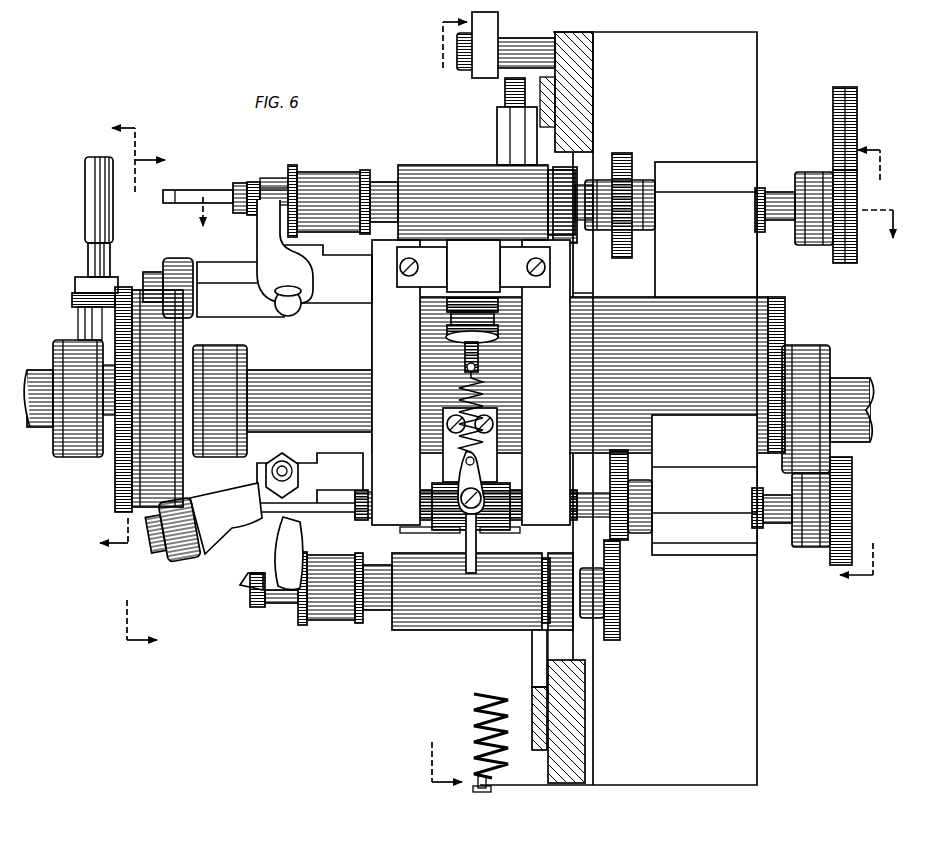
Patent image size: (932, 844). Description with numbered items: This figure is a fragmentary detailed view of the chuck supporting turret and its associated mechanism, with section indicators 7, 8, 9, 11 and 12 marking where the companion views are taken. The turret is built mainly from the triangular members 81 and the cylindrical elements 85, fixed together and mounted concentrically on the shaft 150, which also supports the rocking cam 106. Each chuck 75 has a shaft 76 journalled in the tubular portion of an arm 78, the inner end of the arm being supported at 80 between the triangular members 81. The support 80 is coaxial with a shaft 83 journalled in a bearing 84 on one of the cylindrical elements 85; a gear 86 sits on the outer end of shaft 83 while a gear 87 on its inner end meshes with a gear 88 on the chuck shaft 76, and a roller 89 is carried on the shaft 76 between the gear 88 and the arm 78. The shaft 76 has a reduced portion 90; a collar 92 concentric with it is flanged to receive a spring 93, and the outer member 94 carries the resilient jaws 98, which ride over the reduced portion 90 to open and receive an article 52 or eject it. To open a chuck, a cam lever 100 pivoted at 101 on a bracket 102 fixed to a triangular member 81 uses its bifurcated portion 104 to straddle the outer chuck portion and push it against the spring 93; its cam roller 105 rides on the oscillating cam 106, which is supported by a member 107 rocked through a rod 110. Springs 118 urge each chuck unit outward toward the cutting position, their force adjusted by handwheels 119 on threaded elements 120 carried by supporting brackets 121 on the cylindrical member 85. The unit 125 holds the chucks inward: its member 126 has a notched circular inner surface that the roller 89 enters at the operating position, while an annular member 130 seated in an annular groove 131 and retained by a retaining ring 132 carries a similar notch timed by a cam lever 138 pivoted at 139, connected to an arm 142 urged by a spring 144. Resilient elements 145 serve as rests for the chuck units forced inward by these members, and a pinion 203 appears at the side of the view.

The article 52 is at (194, 193).
The chuck 75 is at (236, 158).
The shaft 76 is at (578, 208).
The arm 78 is at (440, 166).
The support 80 is at (422, 500).
The triangular members 81 is at (372, 336).
The shaft 83 is at (780, 200).
The bearing 84 is at (745, 268).
The cylindrical elements 85 is at (705, 300).
The gear 86 is at (842, 264).
The gear 87 is at (632, 256).
The gear 88 is at (614, 256).
The roller 89 is at (573, 166).
The reduced portion 90 is at (254, 185).
The collar 92 is at (368, 175).
The spring 93 is at (330, 175).
The outer member 94 is at (293, 165).
The resilient jaws 98 is at (238, 190).
The cam lever 100 is at (233, 305).
The pivot 101 is at (291, 316).
The bracket 102 is at (338, 298).
The bifurcated portion 104 is at (262, 228).
The cam roller 105 is at (176, 263).
The cam 106 is at (140, 455).
The member 107 is at (118, 495).
The rod 110 is at (88, 185).
The springs 118 is at (482, 391).
The handwheels 119 is at (498, 330).
The threaded elements 120 is at (465, 355).
The supporting brackets 121 is at (451, 318).
The unit 125 is at (590, 30).
The member 126 is at (595, 78).
The annular member 130 is at (553, 700).
The annular groove 131 is at (565, 688).
The retaining ring 132 is at (535, 670).
The cam lever 138 is at (487, 78).
The pivot 139 is at (460, 70).
The arm 142 is at (497, 143).
The spring 144 is at (472, 712).
The resilient elements 145 is at (440, 276).
The shaft 150 is at (852, 385).
The pinion 203 is at (858, 97).
The section line 7- 7 is at (545, 225).
The section line 8- 8 is at (155, 405).
The section line 9- 9 is at (867, 373).
The section line 11- 11 is at (438, 401).
The section line 12- 12 is at (109, 339).